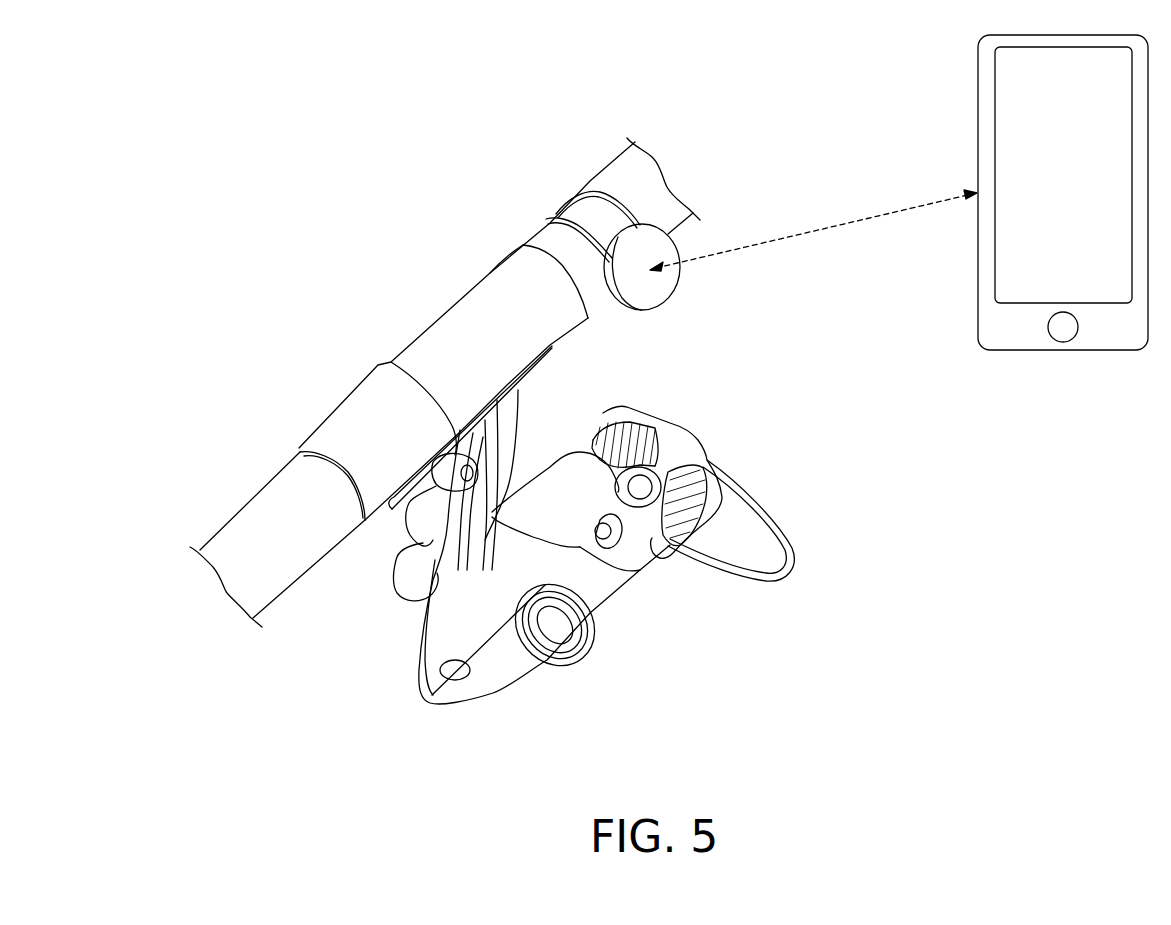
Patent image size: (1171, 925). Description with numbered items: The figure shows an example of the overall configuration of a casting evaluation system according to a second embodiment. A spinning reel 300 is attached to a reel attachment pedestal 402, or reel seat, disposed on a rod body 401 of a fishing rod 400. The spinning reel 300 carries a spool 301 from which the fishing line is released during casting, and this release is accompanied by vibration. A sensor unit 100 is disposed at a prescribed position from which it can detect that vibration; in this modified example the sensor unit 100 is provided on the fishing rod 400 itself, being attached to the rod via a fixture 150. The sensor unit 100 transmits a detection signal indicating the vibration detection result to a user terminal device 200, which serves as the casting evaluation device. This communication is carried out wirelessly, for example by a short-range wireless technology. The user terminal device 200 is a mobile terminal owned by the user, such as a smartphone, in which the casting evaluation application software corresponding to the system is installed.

The sensor unit 100 is at (683, 247).
The fixture 150 is at (555, 215).
The user terminal device 200 is at (978, 122).
The spinning reel 300 is at (660, 593).
The spool 301 is at (593, 437).
The fishing rod 400 is at (303, 294).
The rod body 401 is at (248, 506).
The reel attachment pedestal 402 is at (458, 305).